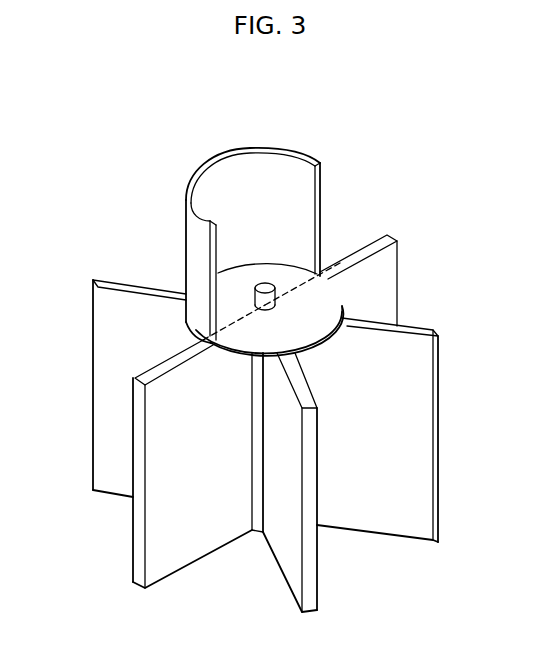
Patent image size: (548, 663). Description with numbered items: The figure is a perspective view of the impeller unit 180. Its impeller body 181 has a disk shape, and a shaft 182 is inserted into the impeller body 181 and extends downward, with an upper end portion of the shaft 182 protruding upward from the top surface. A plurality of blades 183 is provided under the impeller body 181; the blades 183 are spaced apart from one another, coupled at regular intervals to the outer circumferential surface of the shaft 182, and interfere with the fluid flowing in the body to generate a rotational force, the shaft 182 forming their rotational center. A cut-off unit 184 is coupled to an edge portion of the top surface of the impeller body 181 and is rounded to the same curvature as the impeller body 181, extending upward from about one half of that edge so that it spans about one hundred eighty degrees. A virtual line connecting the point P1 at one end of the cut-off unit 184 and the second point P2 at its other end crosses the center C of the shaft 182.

The impeller unit 180 is at (308, 140).
The impeller body 181 is at (333, 297).
The shaft 182 is at (257, 457).
The blades 183 is at (418, 393).
The cut-off unit 184 is at (320, 195).
The center C is at (272, 307).
The point P1 is at (215, 326).
The second point P2 is at (306, 269).